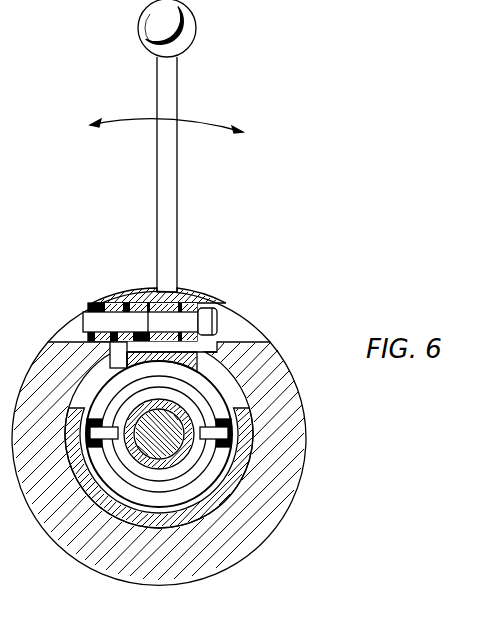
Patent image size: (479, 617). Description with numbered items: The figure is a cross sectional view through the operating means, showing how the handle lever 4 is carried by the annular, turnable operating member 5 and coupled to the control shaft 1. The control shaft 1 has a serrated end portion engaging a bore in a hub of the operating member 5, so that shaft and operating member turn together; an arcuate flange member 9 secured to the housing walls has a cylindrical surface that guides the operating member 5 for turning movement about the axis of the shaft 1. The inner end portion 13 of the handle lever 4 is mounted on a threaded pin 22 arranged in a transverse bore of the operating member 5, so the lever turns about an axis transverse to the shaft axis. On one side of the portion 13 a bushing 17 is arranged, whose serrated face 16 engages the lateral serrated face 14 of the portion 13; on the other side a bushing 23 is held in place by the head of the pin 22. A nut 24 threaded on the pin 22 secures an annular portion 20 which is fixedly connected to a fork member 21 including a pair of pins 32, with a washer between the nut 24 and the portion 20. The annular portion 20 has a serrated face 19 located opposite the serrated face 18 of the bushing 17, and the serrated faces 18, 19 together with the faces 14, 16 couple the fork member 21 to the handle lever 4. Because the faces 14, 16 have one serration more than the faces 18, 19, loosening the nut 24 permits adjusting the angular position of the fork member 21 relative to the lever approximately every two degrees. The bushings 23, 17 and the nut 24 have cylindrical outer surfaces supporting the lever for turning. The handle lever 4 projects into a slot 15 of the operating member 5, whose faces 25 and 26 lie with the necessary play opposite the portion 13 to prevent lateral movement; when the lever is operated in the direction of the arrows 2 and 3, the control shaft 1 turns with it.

The control shaft 1 is at (147, 447).
The arrow 2 is at (172, 137).
The arrow 3 is at (88, 133).
The handle lever 4 is at (178, 225).
The operating member 5 is at (275, 503).
The arcuate flange member 9 is at (243, 445).
The inner end portion 13 is at (192, 353).
The serrated face 14 is at (180, 295).
The slot 15 is at (152, 300).
The serrated face 16 is at (130, 293).
The bushing 17 is at (132, 316).
The serrated face 18 is at (138, 348).
The serrated face 19 is at (118, 352).
The annular portion 20 is at (115, 299).
The fork member 21 is at (108, 387).
The pin 22 is at (232, 343).
The bushing 23 is at (213, 300).
The nut 24 is at (90, 305).
The face 25 is at (148, 293).
The face 26 is at (188, 293).
The pins 32 is at (112, 440).